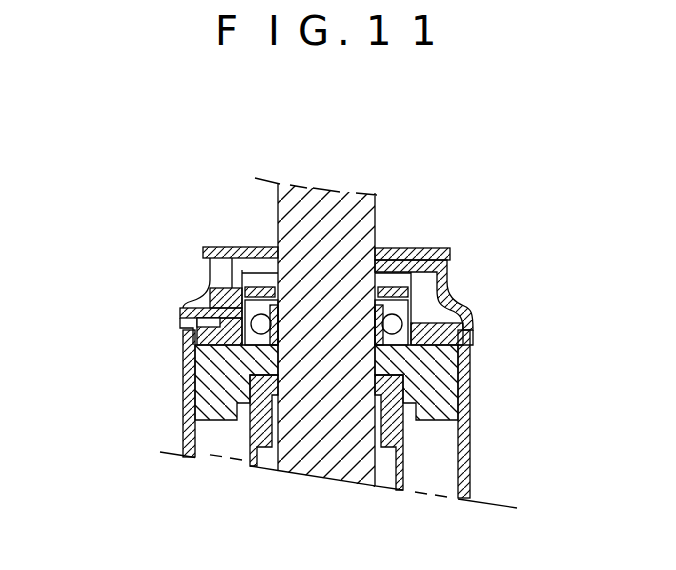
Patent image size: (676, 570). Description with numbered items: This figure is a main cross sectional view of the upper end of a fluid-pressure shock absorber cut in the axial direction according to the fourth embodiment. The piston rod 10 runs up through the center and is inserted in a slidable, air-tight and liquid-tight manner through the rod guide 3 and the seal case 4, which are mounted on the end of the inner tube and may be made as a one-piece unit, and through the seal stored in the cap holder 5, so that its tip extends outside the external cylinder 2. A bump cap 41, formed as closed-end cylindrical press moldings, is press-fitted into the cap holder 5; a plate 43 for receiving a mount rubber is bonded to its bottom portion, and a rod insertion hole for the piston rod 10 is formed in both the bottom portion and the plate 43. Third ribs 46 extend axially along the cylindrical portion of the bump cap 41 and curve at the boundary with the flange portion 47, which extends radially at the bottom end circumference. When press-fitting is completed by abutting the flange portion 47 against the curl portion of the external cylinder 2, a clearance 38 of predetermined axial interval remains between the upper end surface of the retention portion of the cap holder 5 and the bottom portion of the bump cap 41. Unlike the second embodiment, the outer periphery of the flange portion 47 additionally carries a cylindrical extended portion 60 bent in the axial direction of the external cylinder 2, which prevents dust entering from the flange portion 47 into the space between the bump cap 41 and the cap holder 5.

The piston rod 10 is at (278, 207).
The plate 43 is at (210, 246).
The clearance 38 is at (398, 272).
The bump cap 41 is at (193, 291).
The third ribs 46 is at (448, 283).
The flange portion 47 is at (178, 317).
The extended portion 60 is at (178, 335).
The cap holder 5 is at (463, 342).
The seal case 4 is at (462, 380).
The rod guide 3 is at (463, 417).
The external cylinder 2 is at (470, 473).